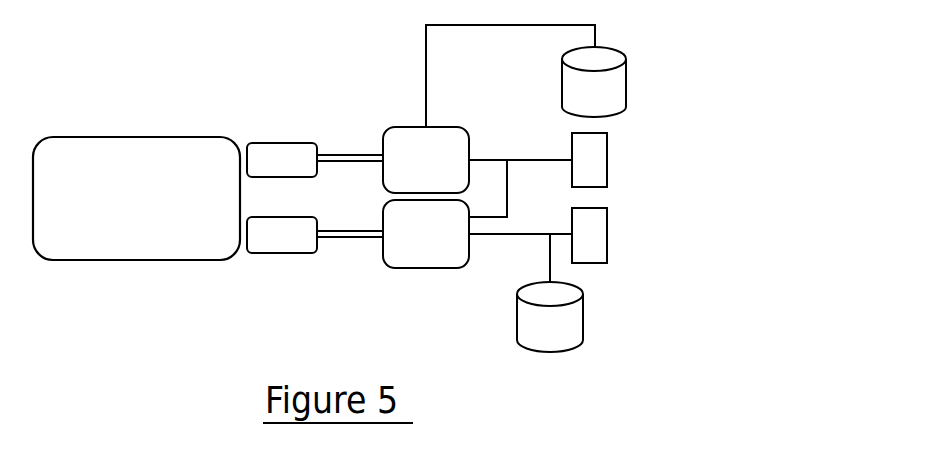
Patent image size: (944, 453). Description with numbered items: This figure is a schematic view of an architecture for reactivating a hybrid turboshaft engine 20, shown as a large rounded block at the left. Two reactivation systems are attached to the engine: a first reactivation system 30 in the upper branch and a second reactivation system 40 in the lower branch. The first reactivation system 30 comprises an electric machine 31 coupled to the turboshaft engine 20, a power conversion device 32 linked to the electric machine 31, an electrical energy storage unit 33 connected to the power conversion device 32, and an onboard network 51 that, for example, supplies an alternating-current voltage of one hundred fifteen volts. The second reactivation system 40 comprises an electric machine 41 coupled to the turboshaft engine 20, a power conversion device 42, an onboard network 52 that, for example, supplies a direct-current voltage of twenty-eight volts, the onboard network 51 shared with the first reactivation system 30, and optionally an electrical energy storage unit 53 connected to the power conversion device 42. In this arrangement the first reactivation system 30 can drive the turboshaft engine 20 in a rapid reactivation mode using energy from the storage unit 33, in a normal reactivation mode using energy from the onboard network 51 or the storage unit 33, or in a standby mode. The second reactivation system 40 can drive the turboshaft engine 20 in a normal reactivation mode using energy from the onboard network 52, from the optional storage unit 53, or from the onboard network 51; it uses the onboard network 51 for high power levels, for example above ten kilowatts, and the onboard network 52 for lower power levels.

The hybrid turboshaft engine 20 is at (145, 137).
The first reactivation system 30 is at (353, 143).
The electric machine 31 is at (288, 143).
The power conversion device 32 is at (472, 152).
The electrical energy storage unit 33 is at (630, 75).
The second reactivation system 40 is at (347, 252).
The electric machine 41 is at (283, 253).
The power conversion device 42 is at (470, 253).
The onboard network 51 is at (608, 157).
The onboard network 52 is at (608, 233).
The electrical energy storage unit 53 is at (583, 317).